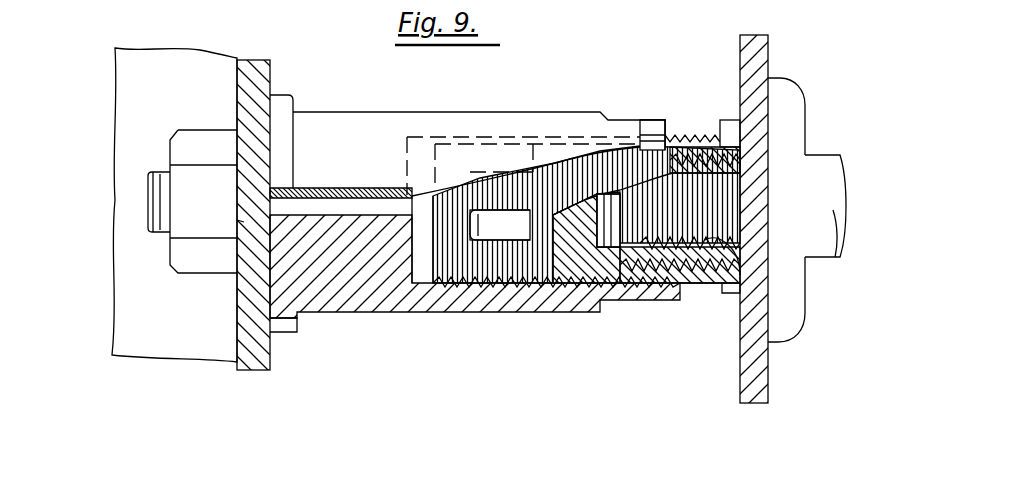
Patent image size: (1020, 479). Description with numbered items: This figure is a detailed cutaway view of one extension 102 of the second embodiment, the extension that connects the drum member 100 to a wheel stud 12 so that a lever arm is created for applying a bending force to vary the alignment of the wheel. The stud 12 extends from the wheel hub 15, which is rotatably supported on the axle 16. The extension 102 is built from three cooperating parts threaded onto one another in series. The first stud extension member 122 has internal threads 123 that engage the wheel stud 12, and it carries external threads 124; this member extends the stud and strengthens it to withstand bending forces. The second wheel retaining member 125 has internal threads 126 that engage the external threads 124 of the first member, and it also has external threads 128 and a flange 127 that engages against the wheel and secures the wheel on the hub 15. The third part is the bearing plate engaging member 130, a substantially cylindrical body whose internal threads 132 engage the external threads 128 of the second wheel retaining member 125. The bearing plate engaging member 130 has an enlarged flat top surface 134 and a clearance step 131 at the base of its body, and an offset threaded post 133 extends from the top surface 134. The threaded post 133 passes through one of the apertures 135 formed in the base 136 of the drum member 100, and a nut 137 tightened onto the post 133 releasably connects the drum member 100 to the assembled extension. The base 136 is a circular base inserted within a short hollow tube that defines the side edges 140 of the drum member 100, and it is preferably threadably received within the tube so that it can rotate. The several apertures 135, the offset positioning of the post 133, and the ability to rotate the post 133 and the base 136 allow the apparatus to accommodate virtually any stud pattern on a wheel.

The drum member 100 is at (235, 382).
The side edges 140 is at (170, 60).
The nuts 137 is at (200, 140).
The threaded post 133 is at (150, 205).
The apertures 135 is at (242, 222).
The base 136 is at (258, 78).
The top surface 134 is at (285, 107).
The bearing plate engaging member 130 is at (352, 302).
The extension 102 is at (450, 120).
The clearance step 131 is at (640, 125).
The internal threads 132 is at (490, 303).
The second wheel retaining member 125 is at (567, 293).
The internal threads 126 is at (657, 300).
The internal threads 123 is at (737, 228).
The external threads 124 is at (725, 275).
The first stud extension member 122 is at (705, 283).
The external threads 128 is at (670, 288).
The flange 127 is at (728, 283).
The stud 12 is at (743, 183).
The wheel hub 15 is at (790, 106).
The axle 16 is at (820, 234).